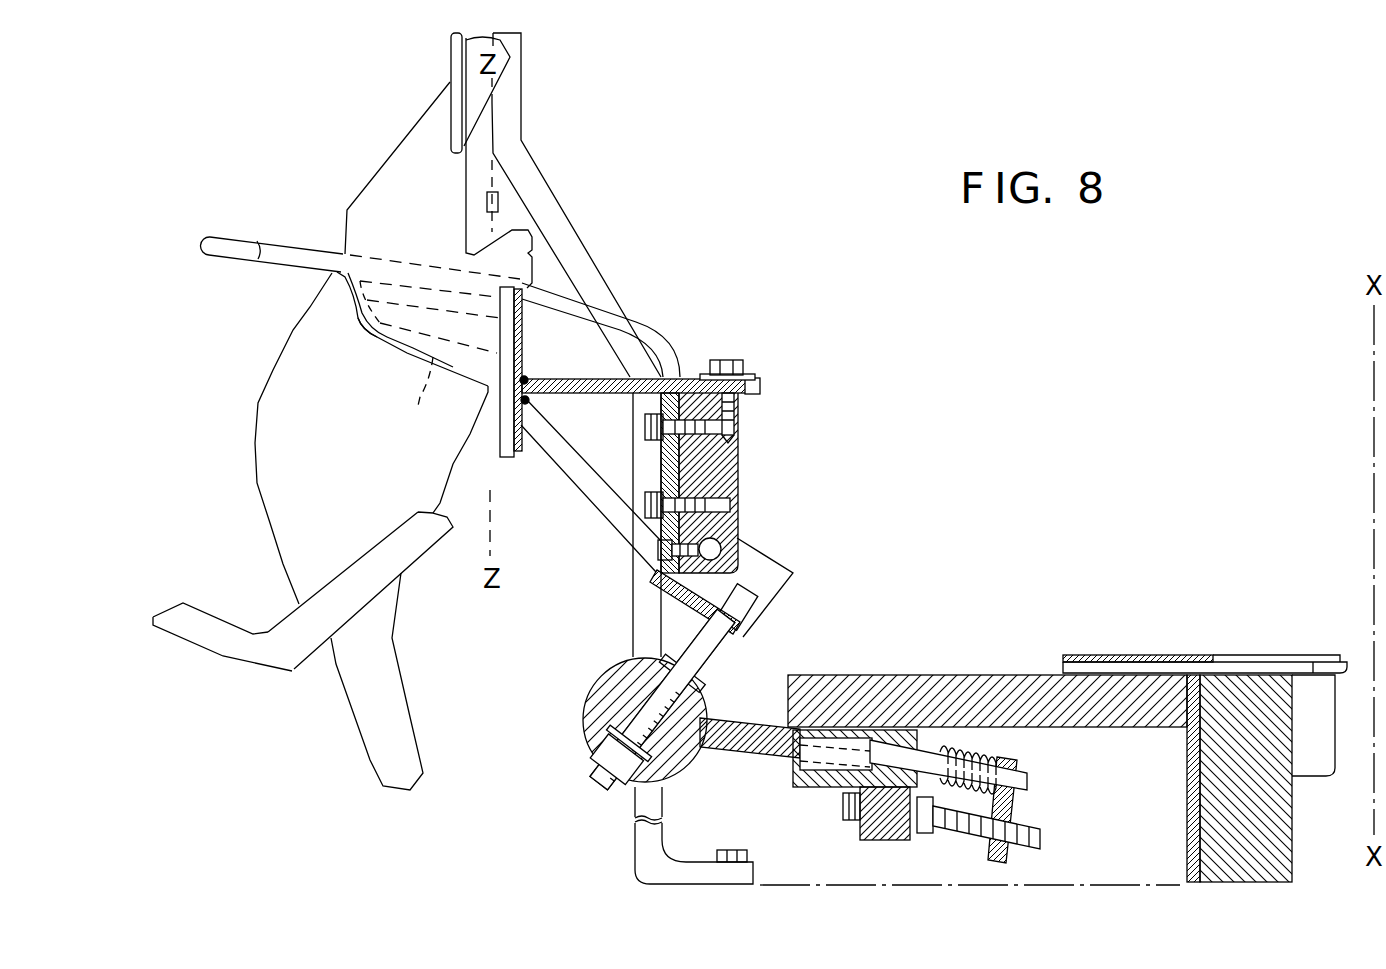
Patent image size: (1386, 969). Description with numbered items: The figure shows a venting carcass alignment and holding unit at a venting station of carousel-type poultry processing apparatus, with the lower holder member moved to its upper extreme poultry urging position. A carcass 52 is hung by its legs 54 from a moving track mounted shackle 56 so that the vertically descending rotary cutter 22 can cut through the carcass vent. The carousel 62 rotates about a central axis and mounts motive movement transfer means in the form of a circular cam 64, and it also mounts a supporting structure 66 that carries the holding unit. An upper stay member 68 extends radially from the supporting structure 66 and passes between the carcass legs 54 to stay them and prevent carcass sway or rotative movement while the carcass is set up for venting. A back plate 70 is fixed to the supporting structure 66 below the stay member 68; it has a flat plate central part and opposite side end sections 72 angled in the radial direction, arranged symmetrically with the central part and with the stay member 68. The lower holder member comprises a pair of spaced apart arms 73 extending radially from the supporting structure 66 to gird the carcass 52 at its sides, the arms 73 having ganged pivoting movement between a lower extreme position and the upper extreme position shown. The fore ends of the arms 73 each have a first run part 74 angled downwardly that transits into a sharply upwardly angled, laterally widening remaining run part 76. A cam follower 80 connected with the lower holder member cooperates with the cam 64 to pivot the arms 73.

The rotary cutter 22 is at (504, 204).
The carcass 52 is at (395, 503).
The legs 54 is at (415, 200).
The shackle 56 is at (456, 88).
The carousel 62 is at (1168, 653).
The cam 64 is at (756, 745).
The supporting structure 66 is at (650, 628).
The upper stay member 68 is at (638, 320).
The back plate 70 is at (522, 376).
The side end sections 72 is at (507, 453).
The arms 73 is at (610, 507).
The first run part 74 is at (405, 357).
The remaining run part 76 is at (365, 327).
The cam follower 80 is at (600, 710).